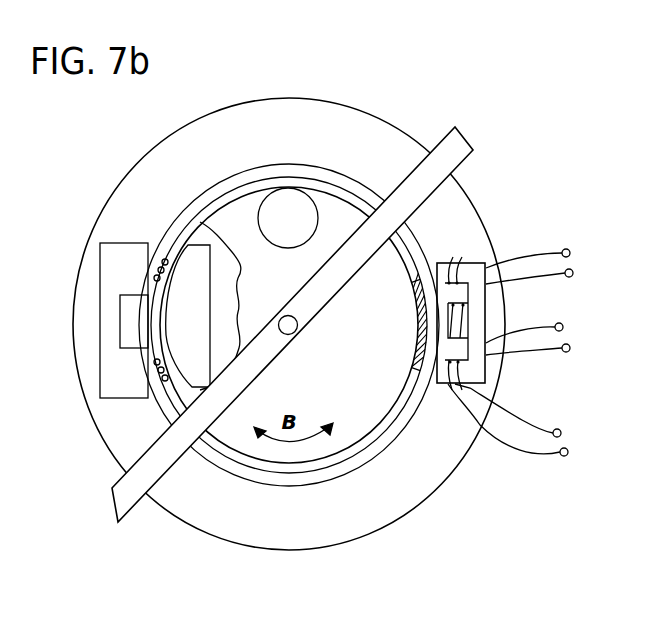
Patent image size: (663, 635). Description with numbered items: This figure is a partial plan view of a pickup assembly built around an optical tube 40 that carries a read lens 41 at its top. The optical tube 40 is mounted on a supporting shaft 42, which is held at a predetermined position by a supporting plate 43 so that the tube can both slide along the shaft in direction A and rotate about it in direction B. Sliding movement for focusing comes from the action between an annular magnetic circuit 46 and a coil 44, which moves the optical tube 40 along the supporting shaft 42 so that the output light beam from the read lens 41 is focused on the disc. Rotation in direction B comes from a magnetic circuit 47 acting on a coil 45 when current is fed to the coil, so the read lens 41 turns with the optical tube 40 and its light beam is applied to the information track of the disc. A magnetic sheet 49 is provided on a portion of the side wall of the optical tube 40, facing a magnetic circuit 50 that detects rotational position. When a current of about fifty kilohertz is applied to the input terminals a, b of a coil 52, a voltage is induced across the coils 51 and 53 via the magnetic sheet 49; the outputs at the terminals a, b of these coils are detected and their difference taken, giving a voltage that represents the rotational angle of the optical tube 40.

The optical tube 40 is at (367, 423).
The read lens 41 is at (302, 201).
The supporting shaft 42 is at (298, 325).
The supporting plate 43 is at (430, 190).
The coil 44 is at (348, 194).
The coil 45 is at (161, 258).
The annular magnetic circuit 46 is at (235, 527).
The magnetic circuit 47 is at (183, 337).
The magnetic sheet 49 is at (422, 363).
The magnetic circuit for detecting a rotational position 50 is at (470, 313).
The coil 51 is at (574, 267).
The coil 52 is at (574, 342).
The coil 53 is at (570, 448).